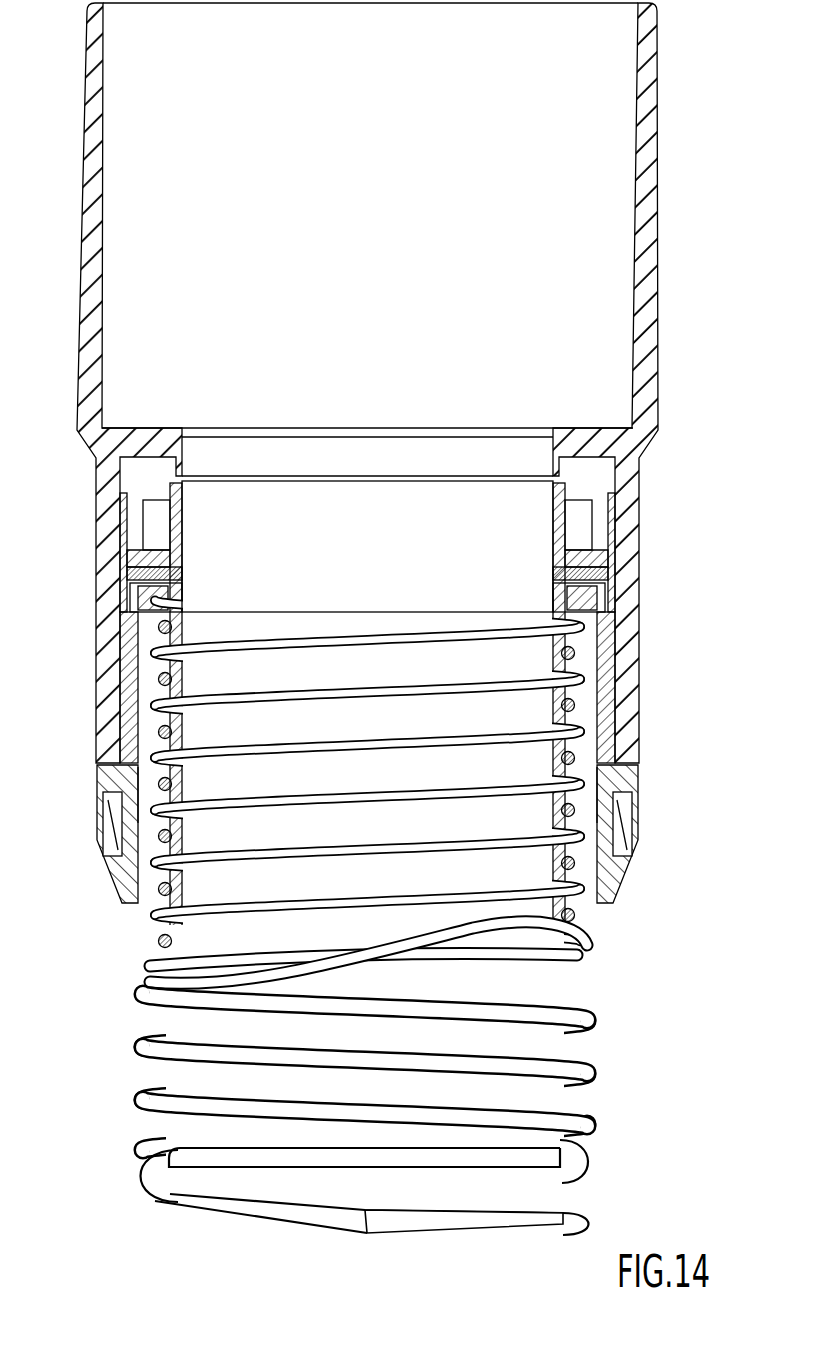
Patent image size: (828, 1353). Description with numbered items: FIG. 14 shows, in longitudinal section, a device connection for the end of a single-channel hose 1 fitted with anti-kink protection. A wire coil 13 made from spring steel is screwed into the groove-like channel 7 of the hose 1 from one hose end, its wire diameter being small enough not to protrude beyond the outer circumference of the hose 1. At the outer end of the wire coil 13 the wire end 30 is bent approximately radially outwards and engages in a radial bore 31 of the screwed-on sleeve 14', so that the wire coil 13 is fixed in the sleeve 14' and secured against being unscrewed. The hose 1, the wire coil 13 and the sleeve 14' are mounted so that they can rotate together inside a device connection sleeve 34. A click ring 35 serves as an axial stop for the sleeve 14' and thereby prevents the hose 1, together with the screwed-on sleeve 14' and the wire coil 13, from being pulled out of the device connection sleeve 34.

The hose 1 is at (143, 1191).
The groove-like channel 7 is at (569, 1177).
The wire coil 13 is at (573, 917).
The sleeve 14' is at (331, 721).
The wire end 30 is at (130, 580).
The radial bore 31 is at (125, 573).
The device connection sleeve 34 is at (640, 504).
The click ring 35 is at (632, 882).